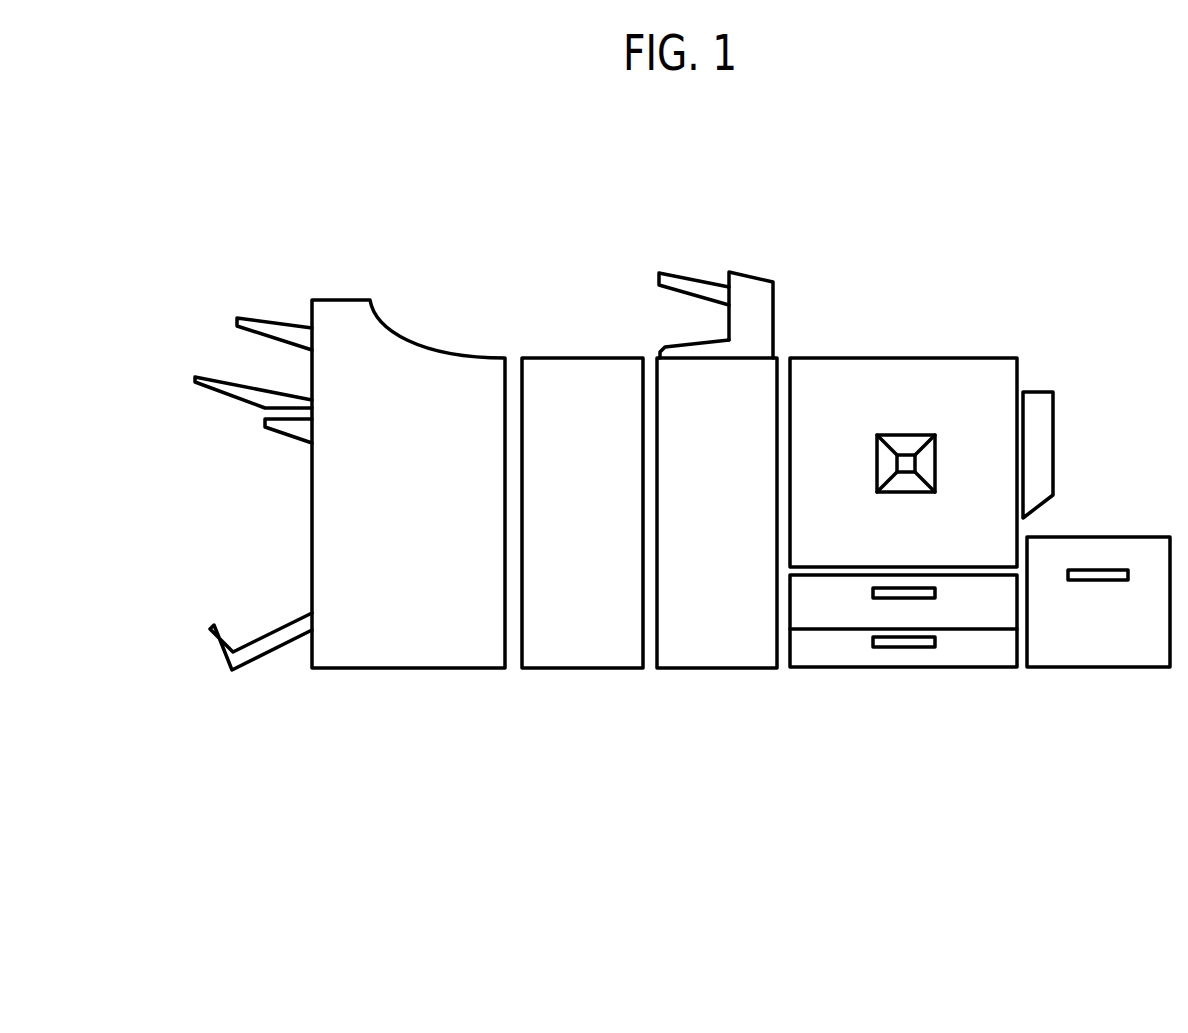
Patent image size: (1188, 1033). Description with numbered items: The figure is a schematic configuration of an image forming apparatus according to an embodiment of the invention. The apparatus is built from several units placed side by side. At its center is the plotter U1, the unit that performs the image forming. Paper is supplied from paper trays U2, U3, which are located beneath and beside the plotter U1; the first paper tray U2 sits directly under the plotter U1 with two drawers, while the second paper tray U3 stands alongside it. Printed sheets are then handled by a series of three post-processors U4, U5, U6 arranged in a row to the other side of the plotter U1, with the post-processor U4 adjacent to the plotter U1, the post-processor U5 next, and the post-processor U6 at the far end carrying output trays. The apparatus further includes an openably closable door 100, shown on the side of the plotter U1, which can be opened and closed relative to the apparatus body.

The plotter U1 is at (902, 358).
The paper tray U2 is at (917, 668).
The paper tray U3 is at (1093, 668).
The post-processor U4 is at (717, 668).
The post-processor U5 is at (582, 668).
The post-processor U6 is at (398, 668).
The openably closable door 100 is at (1045, 443).